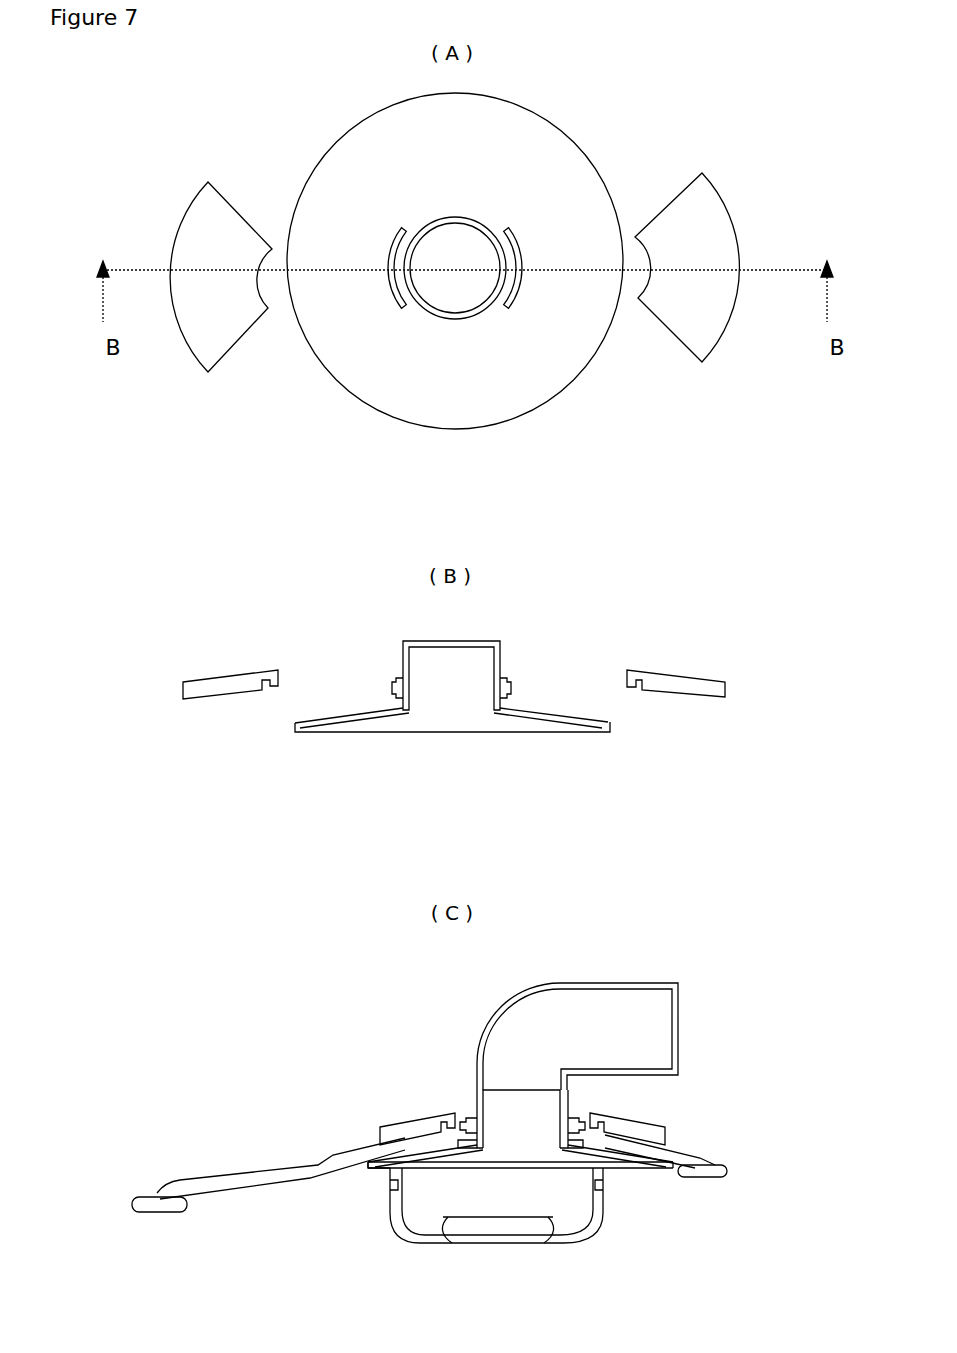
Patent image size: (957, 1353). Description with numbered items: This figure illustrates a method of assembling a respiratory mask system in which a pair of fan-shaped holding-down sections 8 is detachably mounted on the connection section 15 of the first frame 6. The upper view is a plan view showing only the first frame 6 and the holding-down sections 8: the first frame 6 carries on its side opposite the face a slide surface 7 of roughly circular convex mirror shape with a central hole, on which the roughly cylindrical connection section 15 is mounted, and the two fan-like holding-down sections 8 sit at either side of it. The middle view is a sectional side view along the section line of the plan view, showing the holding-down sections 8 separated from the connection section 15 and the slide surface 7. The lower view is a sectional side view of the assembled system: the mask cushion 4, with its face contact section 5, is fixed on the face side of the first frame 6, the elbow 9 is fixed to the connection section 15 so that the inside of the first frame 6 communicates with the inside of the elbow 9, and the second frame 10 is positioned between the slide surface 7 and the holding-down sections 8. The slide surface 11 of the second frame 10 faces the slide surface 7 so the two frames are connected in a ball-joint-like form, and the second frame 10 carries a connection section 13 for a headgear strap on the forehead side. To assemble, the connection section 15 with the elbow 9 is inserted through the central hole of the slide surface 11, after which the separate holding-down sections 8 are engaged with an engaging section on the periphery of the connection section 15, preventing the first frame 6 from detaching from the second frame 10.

The mask cushion 4 is at (597, 1217).
The face contact section of mask cushion 5 is at (563, 1243).
The first frame 6 is at (577, 147).
The slide surface of first frame 7 is at (353, 202).
The holding-down section of first frame 8 is at (180, 223).
The elbow 9 is at (615, 992).
The second frame 10 is at (715, 1162).
The slide surface of second frame 11 is at (407, 1143).
The connection section of headgear strap in second frame 13 is at (153, 1203).
The connection section with elbow 15 is at (483, 310).